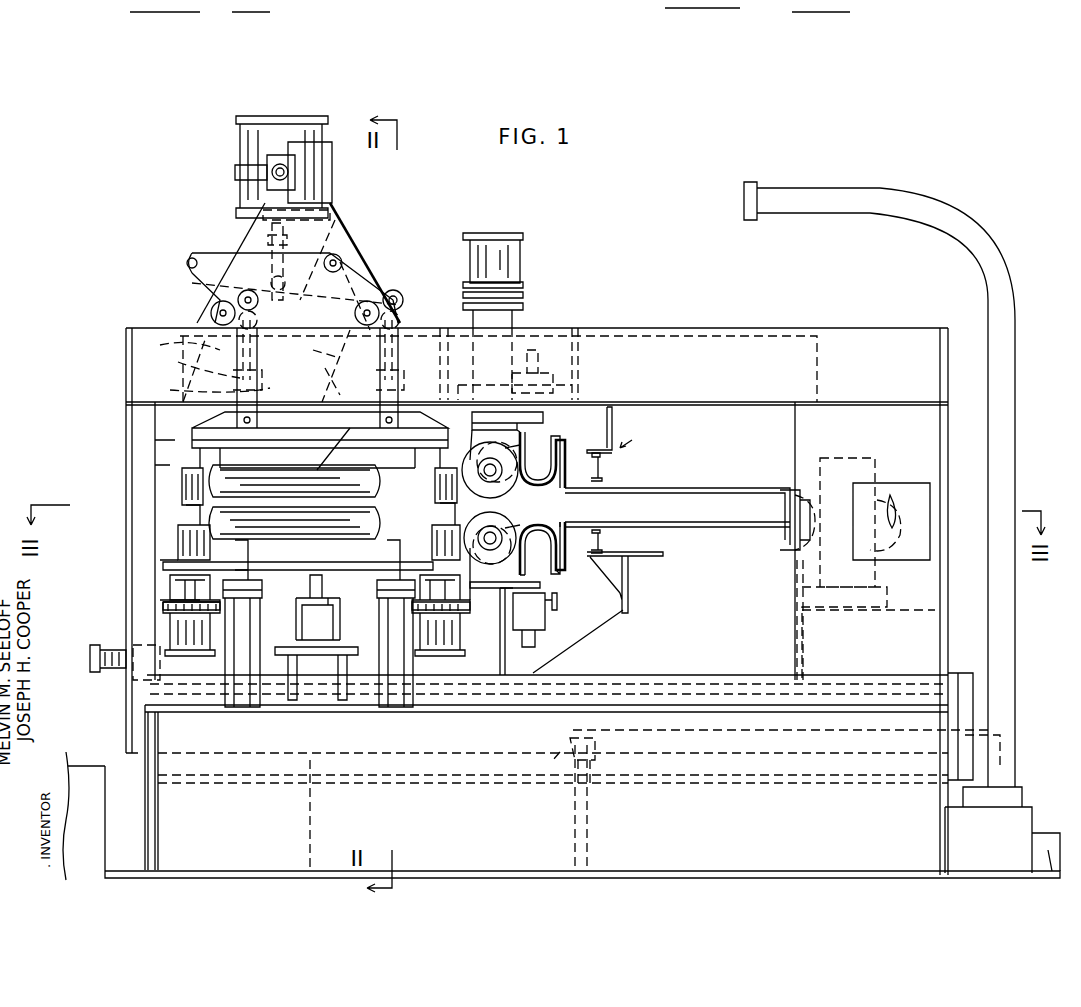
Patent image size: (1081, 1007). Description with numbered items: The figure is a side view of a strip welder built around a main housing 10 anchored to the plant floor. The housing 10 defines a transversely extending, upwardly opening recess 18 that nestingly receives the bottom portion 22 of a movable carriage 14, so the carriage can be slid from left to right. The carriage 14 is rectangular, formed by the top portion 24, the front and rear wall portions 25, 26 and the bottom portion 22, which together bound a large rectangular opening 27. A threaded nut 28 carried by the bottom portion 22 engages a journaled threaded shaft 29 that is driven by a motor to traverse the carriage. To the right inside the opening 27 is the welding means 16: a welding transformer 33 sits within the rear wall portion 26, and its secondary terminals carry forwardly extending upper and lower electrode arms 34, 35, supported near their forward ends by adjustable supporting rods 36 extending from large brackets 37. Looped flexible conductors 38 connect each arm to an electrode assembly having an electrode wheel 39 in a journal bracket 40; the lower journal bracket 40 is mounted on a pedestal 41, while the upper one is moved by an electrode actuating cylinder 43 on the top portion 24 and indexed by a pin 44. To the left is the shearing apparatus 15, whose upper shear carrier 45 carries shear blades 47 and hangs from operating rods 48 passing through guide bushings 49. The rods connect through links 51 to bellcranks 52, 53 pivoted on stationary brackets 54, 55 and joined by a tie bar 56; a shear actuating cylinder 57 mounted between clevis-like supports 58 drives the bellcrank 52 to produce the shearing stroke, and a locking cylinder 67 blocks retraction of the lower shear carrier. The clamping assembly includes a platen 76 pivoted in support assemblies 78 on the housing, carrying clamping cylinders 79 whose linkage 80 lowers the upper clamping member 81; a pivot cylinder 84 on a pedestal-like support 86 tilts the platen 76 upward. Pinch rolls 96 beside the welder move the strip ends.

The main housing 10 is at (102, 748).
The carriage 14 is at (697, 303).
The shearing apparatus 15 is at (182, 460).
The welding means 16 is at (635, 447).
The recess 18 is at (247, 770).
The bottom portion 22 is at (680, 690).
The top portion 24 is at (545, 340).
The front wall portion 25 is at (138, 485).
The rear wall portion 26 is at (886, 476).
The rectangular opening 27 is at (162, 522).
The threaded nut 28 is at (562, 785).
The threaded shaft 29 is at (765, 762).
The welding transformer 33 is at (842, 470).
The upper electrode arm 34 is at (672, 488).
The lower electrode arm 35 is at (715, 530).
The adjustable supporting rods 36 is at (602, 471).
The brackets 37 is at (613, 436).
The flexible conductors 38 is at (556, 532).
The electrode wheel 39 is at (505, 523).
The journal bracket 40 is at (508, 445).
The pedestal 41 is at (500, 658).
The electrode actuating cylinder 43 is at (505, 256).
The pin 44 is at (540, 360).
The upper shear carrier 45 is at (296, 425).
The shear blades 47 is at (310, 440).
The operating rods 48 is at (415, 335).
The guide bushings 49 is at (182, 362).
The links 51 is at (210, 310).
The bellcrank 52 is at (195, 280).
The bellcrank 53 is at (382, 298).
The stationary bracket 54 is at (160, 345).
The stationary bracket 55 is at (335, 355).
The tie bar 56 is at (350, 232).
The shear actuating cylinder 57 is at (240, 157).
The clevis-like supports 58 is at (325, 190).
The locking cylinder 67 is at (108, 672).
The platen 76 is at (310, 552).
The support assemblies 78 is at (248, 625).
The clamping cylinders 79 is at (158, 630).
The linkage 80 is at (185, 578).
The upper clamping member 81 is at (398, 482).
The pivot cylinder 84 is at (318, 616).
The pedestal-like support 86 is at (320, 655).
The pinch rolls 96 is at (185, 488).